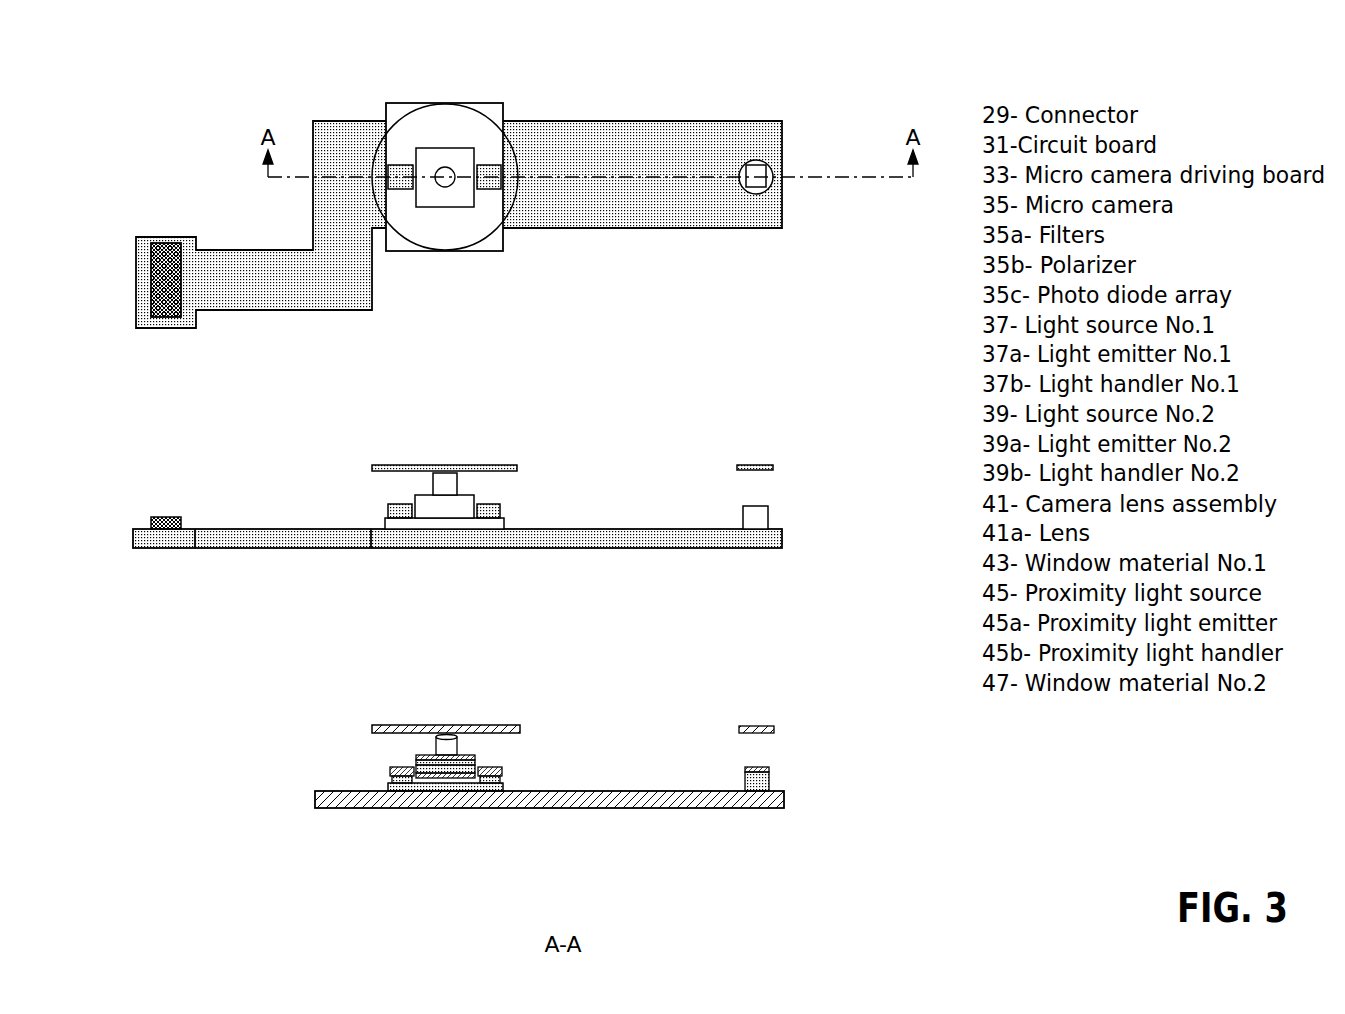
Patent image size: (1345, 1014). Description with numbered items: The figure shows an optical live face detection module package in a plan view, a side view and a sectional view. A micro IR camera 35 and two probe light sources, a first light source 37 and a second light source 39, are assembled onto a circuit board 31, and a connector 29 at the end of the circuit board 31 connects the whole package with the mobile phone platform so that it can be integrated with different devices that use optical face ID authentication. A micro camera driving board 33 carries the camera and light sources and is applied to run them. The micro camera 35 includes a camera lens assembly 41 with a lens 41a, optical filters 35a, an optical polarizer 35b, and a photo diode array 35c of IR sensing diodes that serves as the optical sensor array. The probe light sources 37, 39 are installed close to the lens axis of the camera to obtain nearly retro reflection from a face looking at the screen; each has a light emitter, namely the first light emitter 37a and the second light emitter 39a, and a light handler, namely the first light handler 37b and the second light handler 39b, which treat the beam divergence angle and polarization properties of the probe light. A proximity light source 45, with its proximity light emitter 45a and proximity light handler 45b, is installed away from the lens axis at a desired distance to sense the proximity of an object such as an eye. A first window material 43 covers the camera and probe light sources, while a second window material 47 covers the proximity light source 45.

The connector 29 is at (168, 270).
The circuit board 31 is at (628, 195).
The micro camera driving board 33 is at (503, 103).
The micro camera 35 is at (463, 193).
The filters 35a is at (463, 756).
The polarizer 35b is at (458, 767).
The photo diode array 35c is at (432, 776).
The light source No. 1 37 is at (403, 177).
The light emitter No. 1 37a is at (398, 782).
The light handler No. 1 37b is at (392, 765).
The light source No. 2 39 is at (490, 177).
The light emitter No. 2 39a is at (487, 779).
The light handler No. 2 39b is at (487, 767).
The camera lens assembly 41 is at (445, 173).
The lens 41a is at (433, 742).
The window material No. 1 43 is at (415, 122).
The proximity light source 45 is at (755, 175).
The proximity light emitter 45a is at (756, 782).
The proximity light handler 45b is at (758, 767).
The window material No. 2 47 is at (757, 193).